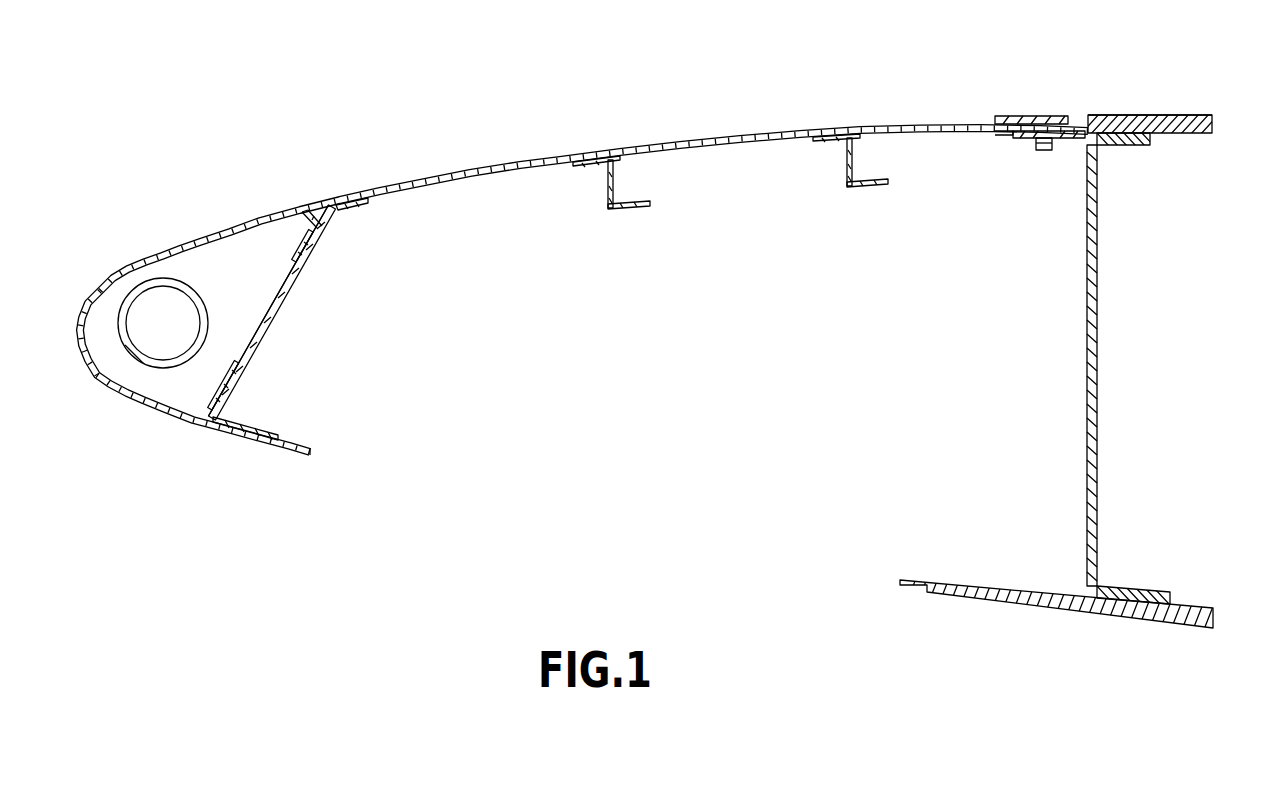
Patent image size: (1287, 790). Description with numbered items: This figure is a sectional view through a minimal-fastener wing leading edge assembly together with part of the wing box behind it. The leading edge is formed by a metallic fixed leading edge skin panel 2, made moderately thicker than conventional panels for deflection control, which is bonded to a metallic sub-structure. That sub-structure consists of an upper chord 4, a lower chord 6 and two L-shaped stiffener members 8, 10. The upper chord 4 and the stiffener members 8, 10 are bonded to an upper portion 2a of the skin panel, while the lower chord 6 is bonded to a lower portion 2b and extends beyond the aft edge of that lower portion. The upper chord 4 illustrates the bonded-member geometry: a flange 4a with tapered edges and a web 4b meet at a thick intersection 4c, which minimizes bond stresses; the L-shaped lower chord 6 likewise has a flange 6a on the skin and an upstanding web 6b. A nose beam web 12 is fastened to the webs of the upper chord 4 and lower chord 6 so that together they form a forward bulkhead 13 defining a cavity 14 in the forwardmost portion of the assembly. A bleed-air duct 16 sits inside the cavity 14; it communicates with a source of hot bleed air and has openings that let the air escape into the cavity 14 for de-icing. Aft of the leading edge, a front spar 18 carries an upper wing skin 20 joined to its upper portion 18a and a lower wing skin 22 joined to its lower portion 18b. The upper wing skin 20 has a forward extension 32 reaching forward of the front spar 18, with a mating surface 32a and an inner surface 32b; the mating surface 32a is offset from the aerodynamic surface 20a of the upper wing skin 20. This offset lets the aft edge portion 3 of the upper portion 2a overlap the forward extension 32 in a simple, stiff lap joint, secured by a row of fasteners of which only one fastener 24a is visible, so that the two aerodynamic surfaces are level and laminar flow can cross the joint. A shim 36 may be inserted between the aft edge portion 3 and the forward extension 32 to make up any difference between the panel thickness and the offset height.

The fixed leading edge skin panel 2 is at (584, 281).
The upper portion of fixed leading edge skin panel 2a is at (480, 167).
The lower portion of fixed leading edge skin panel 2b is at (178, 421).
The aft edge portion 3 is at (1008, 155).
The upper chord 4 is at (344, 208).
The flange of upper chord 4a is at (366, 212).
The web of upper chord 4b is at (303, 255).
The intersection of upper chord 4c is at (323, 215).
The lower chord 6 is at (241, 407).
The flange of lower chord 6a is at (282, 446).
The web of lower chord 6b is at (240, 385).
The stiffener member 8 is at (606, 198).
The stiffener member 10 is at (846, 172).
The nose beam web 12 is at (268, 345).
The forward bulkhead 13 is at (303, 312).
The cavity 14 is at (254, 246).
The bleed-air duct 16 is at (148, 279).
The front spar 18 is at (1159, 368).
The upper portion of front spar 18a is at (1123, 147).
The lower portion of front spar 18b is at (1140, 592).
The upper wing skin 20 is at (1175, 107).
The aerodynamic surface of upper wing skin 20a is at (1158, 115).
The lower wing skin 22 is at (1082, 612).
The fastener 24a is at (1037, 150).
The forward extension 32 is at (1032, 155).
The mating surface 32a is at (1077, 126).
The inner surface 32b is at (1065, 139).
The shim 36 is at (1007, 131).